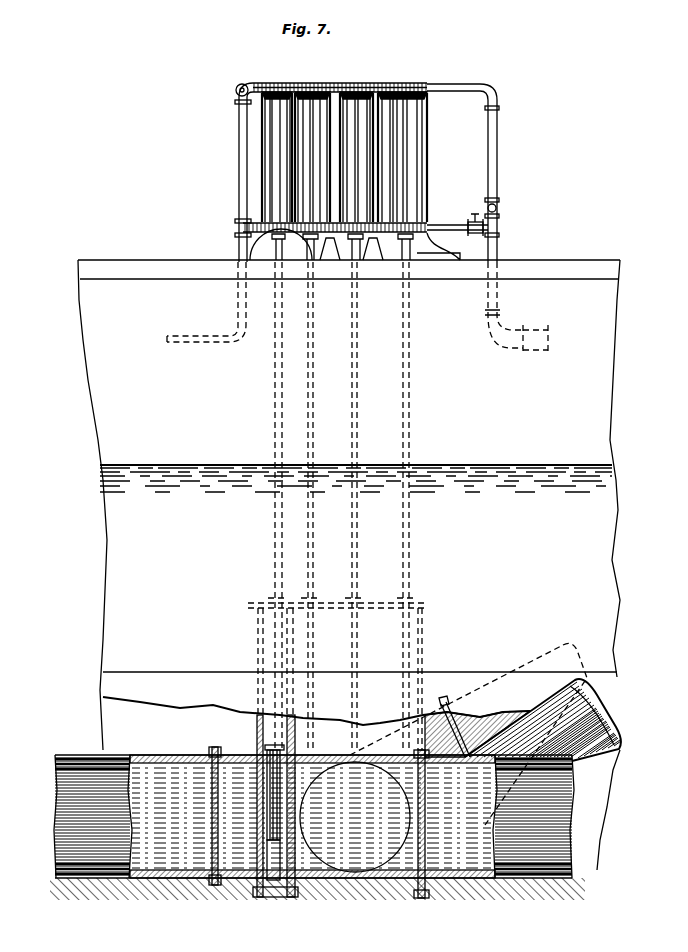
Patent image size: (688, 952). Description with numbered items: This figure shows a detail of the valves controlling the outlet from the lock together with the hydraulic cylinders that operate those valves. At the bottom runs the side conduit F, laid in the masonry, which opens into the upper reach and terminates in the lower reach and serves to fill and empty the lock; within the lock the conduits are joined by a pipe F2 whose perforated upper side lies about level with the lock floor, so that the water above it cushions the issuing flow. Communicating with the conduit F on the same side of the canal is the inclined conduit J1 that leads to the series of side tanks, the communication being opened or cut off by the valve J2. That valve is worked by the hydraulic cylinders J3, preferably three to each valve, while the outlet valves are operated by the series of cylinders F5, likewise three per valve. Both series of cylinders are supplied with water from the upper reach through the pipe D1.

The cylinders F5 is at (280, 83).
The hydraulic cylinders J3 is at (400, 82).
The pipe D1 is at (548, 340).
The side conduit F is at (314, 816).
The pipe F2 is at (266, 803).
The valve J2 is at (355, 817).
The inclined conduit J1 is at (523, 720).